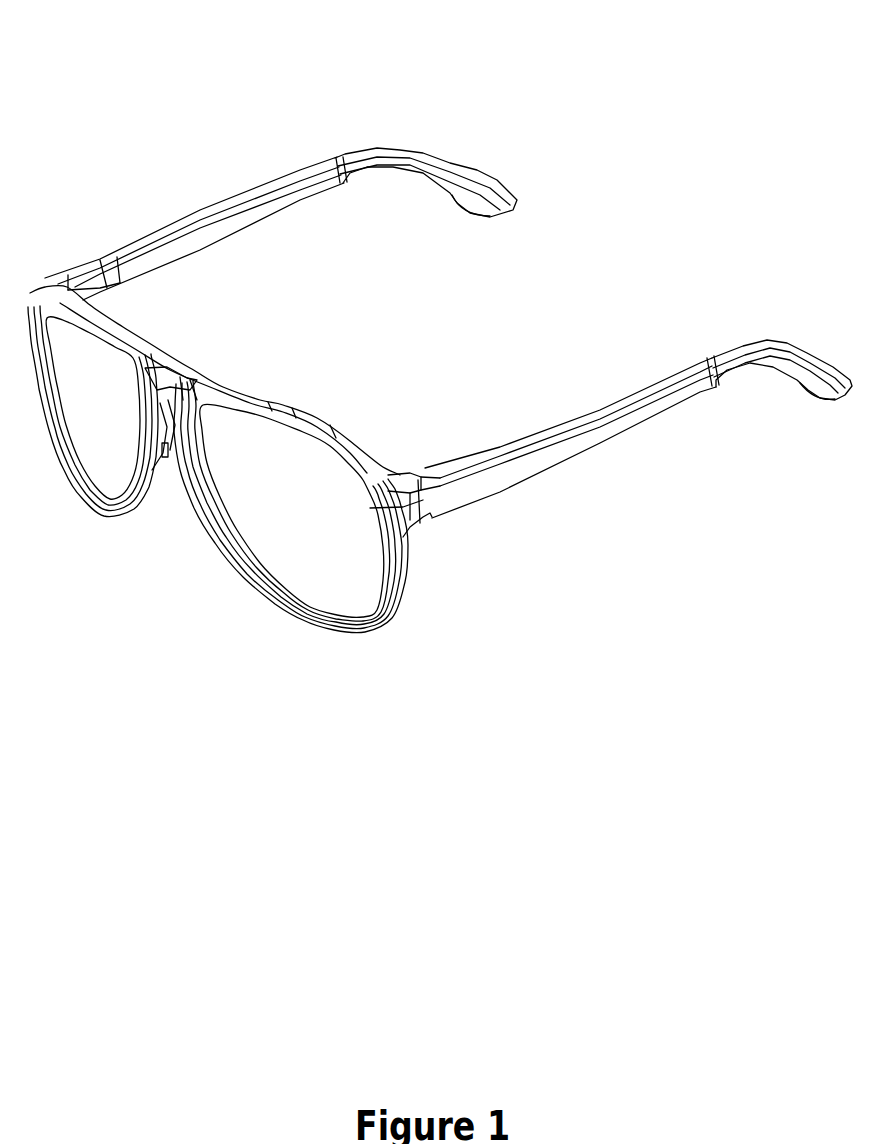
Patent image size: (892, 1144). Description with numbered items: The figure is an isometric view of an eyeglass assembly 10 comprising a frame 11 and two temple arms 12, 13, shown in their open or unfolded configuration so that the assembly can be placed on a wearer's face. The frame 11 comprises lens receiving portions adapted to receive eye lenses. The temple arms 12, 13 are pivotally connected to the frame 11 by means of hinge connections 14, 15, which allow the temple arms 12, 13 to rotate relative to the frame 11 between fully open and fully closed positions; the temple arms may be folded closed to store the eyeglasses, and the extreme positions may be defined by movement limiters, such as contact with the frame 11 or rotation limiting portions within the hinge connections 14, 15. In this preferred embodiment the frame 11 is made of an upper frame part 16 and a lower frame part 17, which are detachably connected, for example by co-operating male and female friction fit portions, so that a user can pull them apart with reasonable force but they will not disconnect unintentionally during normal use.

The eyeglass assembly 10 is at (595, 88).
The frame 11 is at (133, 611).
The temple arm 12 is at (665, 400).
The temple arm 13 is at (222, 234).
The hinge connection 14 is at (30, 292).
The hinge connection 15 is at (433, 571).
The upper frame part 16 is at (329, 473).
The lower frame part 17 is at (268, 651).